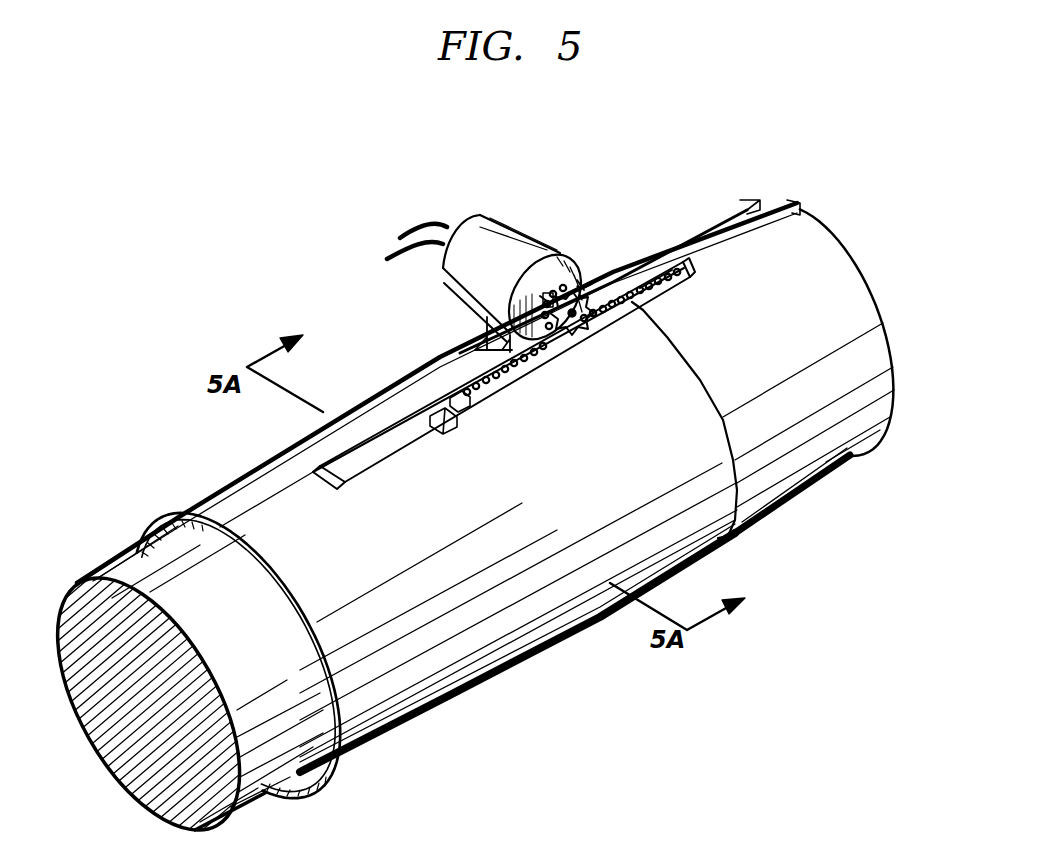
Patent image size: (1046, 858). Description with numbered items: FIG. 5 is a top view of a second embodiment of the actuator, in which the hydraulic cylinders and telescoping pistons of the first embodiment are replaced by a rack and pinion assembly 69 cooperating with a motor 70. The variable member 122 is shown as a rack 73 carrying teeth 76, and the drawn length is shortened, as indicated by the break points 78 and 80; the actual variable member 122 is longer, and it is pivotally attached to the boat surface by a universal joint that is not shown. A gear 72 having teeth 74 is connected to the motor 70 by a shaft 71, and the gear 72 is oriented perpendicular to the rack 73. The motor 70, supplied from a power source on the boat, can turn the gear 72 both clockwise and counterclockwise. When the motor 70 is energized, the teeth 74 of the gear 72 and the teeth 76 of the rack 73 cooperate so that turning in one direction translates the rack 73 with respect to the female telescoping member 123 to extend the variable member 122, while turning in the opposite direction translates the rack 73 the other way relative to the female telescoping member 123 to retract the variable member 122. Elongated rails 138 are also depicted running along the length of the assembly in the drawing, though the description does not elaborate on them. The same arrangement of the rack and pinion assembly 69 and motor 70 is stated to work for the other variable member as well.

The rack and pinion assembly 69 is at (621, 272).
The motor 70 is at (513, 222).
The shaft 71 is at (543, 300).
The gear 72 is at (574, 330).
The rack 73 is at (660, 292).
The teeth 74 is at (577, 280).
The teeth 76 is at (532, 368).
The break point 78 is at (690, 276).
The break point 80 is at (450, 397).
The variable member 122 is at (548, 662).
The female telescoping member 123 is at (596, 540).
The rail 138 is at (714, 214).